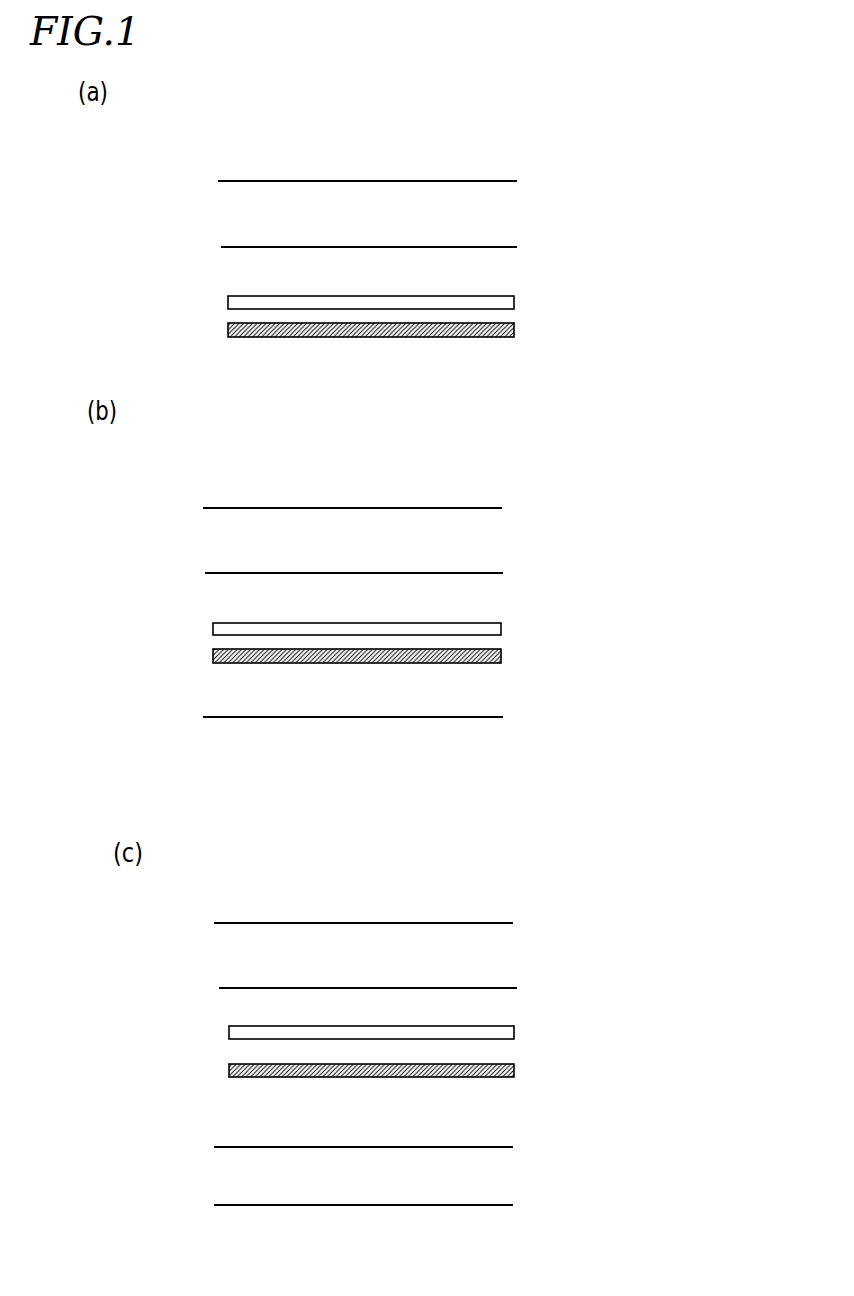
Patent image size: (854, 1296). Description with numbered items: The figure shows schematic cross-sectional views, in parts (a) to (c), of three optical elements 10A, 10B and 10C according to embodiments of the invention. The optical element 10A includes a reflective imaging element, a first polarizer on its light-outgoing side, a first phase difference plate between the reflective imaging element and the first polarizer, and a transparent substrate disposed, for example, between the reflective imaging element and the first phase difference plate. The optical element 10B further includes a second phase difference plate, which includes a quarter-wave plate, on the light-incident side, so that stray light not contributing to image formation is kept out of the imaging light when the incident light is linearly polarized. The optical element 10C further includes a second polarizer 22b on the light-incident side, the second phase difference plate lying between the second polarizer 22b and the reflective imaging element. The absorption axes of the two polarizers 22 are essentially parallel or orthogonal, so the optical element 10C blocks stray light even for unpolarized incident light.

The optical element 10A is at (710, 187).
The optical element 10B is at (696, 517).
The optical element 10C is at (703, 936).
The polarizer 22 is at (411, 1043).
The second polarizer 22b is at (505, 1205).